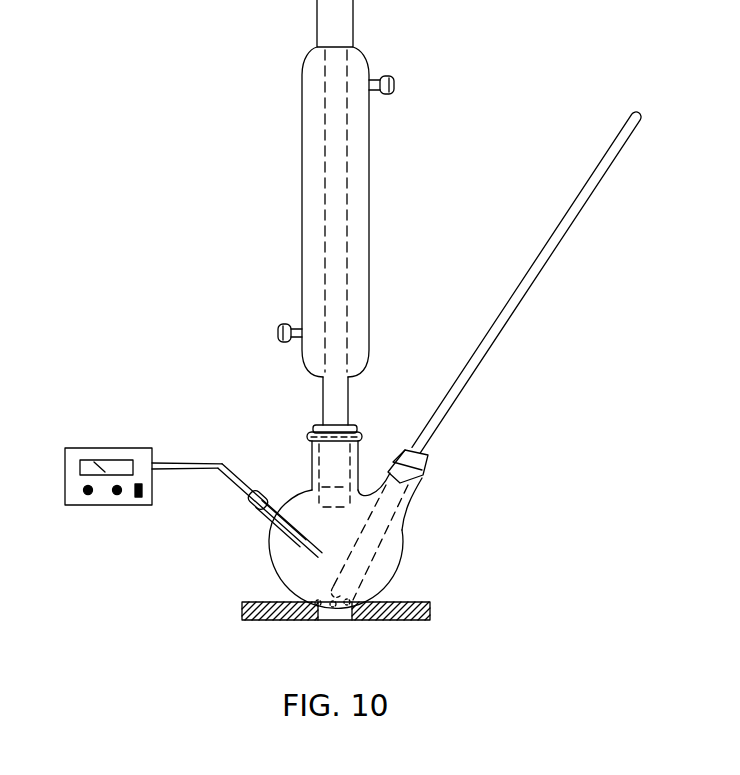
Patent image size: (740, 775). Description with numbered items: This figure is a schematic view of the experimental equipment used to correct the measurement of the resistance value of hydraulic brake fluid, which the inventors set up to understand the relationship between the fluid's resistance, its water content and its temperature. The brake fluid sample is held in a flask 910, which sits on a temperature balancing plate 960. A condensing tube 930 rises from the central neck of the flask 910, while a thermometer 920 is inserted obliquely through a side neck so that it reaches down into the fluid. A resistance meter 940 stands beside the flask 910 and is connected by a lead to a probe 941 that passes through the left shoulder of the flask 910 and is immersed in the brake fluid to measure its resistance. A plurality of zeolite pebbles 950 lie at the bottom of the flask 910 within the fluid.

The flask 910 is at (300, 502).
The thermometer 920 is at (477, 378).
The condensing tube 930 is at (372, 192).
The resistance meter 940 is at (105, 448).
The probe 941 is at (305, 558).
The zeolite pebbles 950 is at (385, 568).
The temperature balancing plate 960 is at (430, 607).